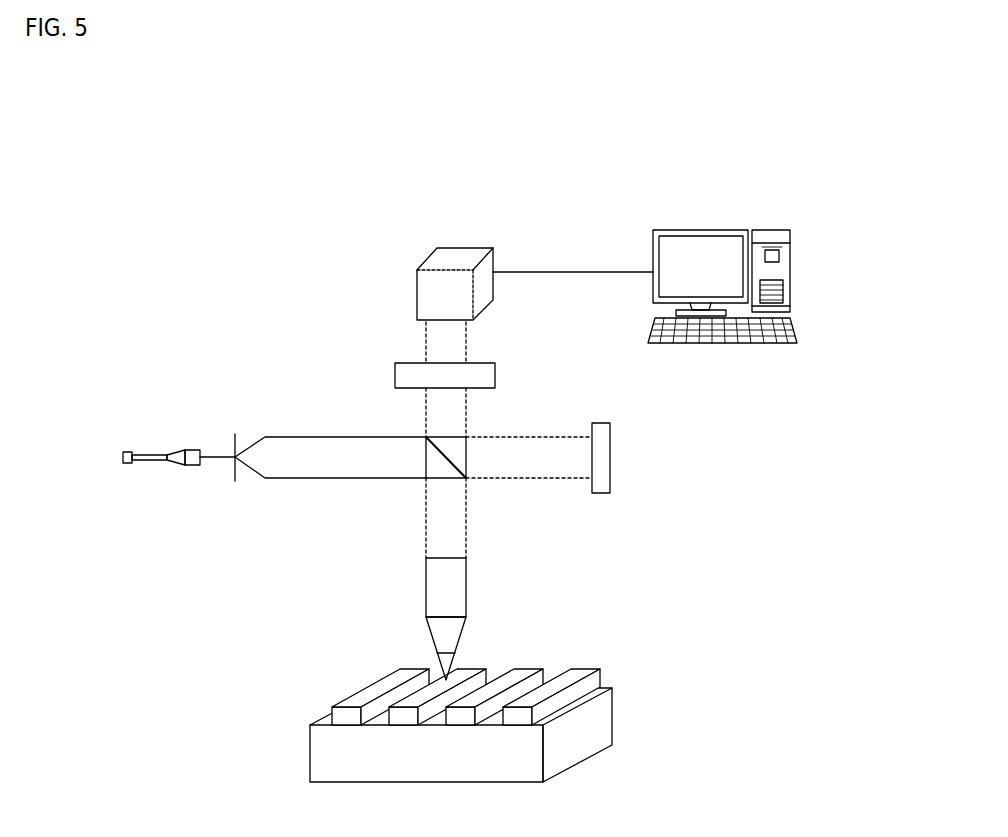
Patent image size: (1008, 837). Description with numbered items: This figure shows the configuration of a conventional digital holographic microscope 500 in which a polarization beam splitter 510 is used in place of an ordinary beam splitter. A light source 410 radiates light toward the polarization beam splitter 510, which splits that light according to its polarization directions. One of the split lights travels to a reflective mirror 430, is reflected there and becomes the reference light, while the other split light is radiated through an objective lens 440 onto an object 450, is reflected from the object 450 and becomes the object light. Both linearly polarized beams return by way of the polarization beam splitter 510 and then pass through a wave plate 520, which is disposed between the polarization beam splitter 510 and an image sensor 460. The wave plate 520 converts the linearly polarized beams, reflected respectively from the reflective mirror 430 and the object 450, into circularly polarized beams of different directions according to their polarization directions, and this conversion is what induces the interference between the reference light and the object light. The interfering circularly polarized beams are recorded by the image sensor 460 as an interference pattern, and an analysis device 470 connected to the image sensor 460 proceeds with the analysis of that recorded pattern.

The conventional digital holographic microscope 500 is at (460, 110).
The light source 410 is at (151, 447).
The image sensor 460 is at (455, 245).
The analysis device 470 is at (768, 229).
The wave plate 520 is at (416, 372).
The reflective mirror 430 is at (612, 452).
The polarization beam splitter 510 is at (437, 463).
The objective lens 440 is at (440, 586).
The object 450 is at (600, 717).